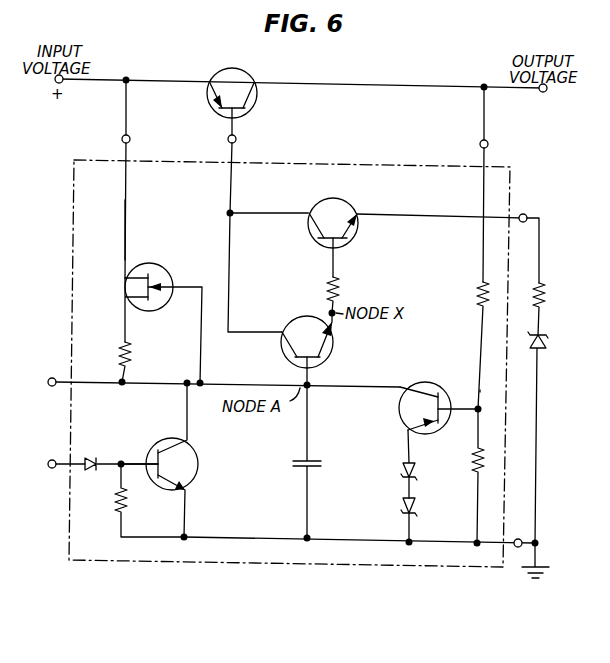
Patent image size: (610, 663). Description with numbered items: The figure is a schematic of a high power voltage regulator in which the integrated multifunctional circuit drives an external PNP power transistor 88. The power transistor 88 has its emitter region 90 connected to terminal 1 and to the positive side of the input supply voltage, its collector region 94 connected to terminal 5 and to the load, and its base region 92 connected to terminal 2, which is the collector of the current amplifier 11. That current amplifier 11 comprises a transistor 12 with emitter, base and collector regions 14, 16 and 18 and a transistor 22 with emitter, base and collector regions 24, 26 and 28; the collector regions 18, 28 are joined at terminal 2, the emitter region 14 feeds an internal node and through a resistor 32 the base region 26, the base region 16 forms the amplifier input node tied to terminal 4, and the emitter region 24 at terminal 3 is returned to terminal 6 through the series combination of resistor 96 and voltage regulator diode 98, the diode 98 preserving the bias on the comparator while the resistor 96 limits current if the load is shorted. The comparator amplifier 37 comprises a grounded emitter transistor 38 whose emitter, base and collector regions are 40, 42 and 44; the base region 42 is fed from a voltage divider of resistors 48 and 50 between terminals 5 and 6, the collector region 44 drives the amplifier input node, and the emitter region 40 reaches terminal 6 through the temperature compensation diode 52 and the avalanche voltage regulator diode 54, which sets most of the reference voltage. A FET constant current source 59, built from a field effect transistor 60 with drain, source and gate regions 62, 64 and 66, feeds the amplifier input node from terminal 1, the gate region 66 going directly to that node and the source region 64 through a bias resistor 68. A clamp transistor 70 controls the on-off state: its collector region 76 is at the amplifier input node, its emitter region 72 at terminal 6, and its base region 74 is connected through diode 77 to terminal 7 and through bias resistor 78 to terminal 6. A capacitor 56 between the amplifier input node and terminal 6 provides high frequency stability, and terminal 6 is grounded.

The external terminal 1 is at (132, 179).
The external terminal 2 is at (238, 172).
The external terminal 3 is at (528, 239).
The external terminal 4 is at (223, 373).
The external terminal 5 is at (490, 184).
The external terminal 6 is at (518, 534).
The external terminal 7 is at (102, 455).
The current amplifier 11 is at (423, 246).
The transistor 12 is at (319, 360).
The emitter region 14 is at (337, 336).
The base region 16 is at (302, 375).
The collector region 18 is at (284, 340).
The transistor 22 is at (346, 243).
The emitter region 24 is at (358, 218).
The base region 26 is at (331, 262).
The collector region 28 is at (308, 228).
The resistor 32 is at (322, 292).
The comparator amplifier 37 is at (416, 353).
The grounded emitter transistor 38 is at (441, 395).
The emitter region 40 is at (409, 429).
The base region 42 is at (448, 411).
The collector region 44 is at (420, 385).
The resistor 48 is at (475, 289).
The resistor 50 is at (471, 456).
The temperature compensation diode 52 is at (402, 466).
The voltage regulator diode 54 is at (402, 506).
The capacitor 56 is at (296, 466).
The FET constant current source 59 is at (162, 249).
The field effect transistor 60 is at (152, 276).
The drain region 62 is at (128, 206).
The source region 64 is at (136, 297).
The gate region 66 is at (201, 323).
The bias resistor 68 is at (133, 352).
The clamp transistor 70 is at (162, 445).
The emitter region 72 is at (180, 492).
The base region 74 is at (137, 462).
The collector region 76 is at (193, 452).
The diode 77 is at (88, 456).
The bias resistor 78 is at (115, 497).
The external PNP power transistor 88 is at (243, 110).
The emitter region 90 is at (210, 92).
The base region 92 is at (230, 122).
The collector region 94 is at (253, 92).
The resistor 96 is at (548, 289).
The voltage regulator diode 98 is at (548, 345).